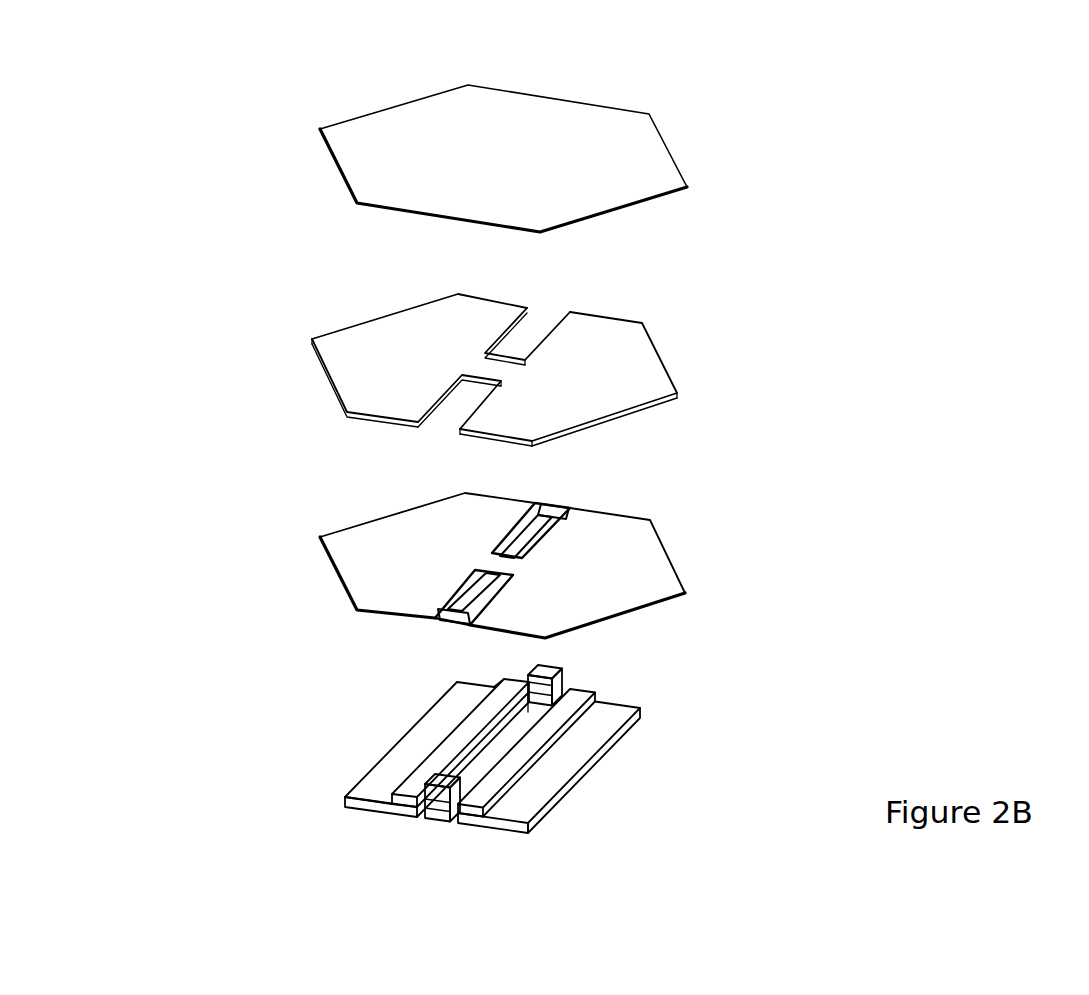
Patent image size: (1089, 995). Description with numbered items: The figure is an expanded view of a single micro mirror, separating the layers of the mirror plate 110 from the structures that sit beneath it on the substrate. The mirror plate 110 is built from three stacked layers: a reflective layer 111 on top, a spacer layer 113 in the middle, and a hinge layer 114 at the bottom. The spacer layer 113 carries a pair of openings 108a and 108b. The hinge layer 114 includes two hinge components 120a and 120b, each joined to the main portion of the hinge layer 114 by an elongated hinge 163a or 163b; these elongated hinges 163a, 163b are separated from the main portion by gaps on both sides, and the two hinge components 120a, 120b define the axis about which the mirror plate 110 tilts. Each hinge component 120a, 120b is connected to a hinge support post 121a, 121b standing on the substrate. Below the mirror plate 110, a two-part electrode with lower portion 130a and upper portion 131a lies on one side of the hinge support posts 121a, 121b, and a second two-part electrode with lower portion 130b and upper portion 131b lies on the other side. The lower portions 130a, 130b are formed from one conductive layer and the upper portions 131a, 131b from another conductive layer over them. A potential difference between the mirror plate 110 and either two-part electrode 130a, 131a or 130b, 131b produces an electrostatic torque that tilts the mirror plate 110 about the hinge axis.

The mirror plate 110 is at (238, 120).
The reflective layer 111 is at (584, 173).
The spacer layer 113 is at (573, 365).
The opening 108a is at (542, 320).
The opening 108b is at (459, 400).
The hinge layer 114 is at (611, 568).
The hinge component 120a is at (438, 628).
The hinge component 120b is at (563, 503).
The elongated hinge 163a is at (483, 590).
The elongated hinge 163b is at (532, 532).
The hinge support post 121a is at (434, 821).
The hinge support post 121b is at (564, 676).
The electrode lower portion 130a is at (537, 780).
The electrode lower portion 130b is at (396, 766).
The electrode upper portion 131a is at (510, 757).
The electrode upper portion 131b is at (462, 741).